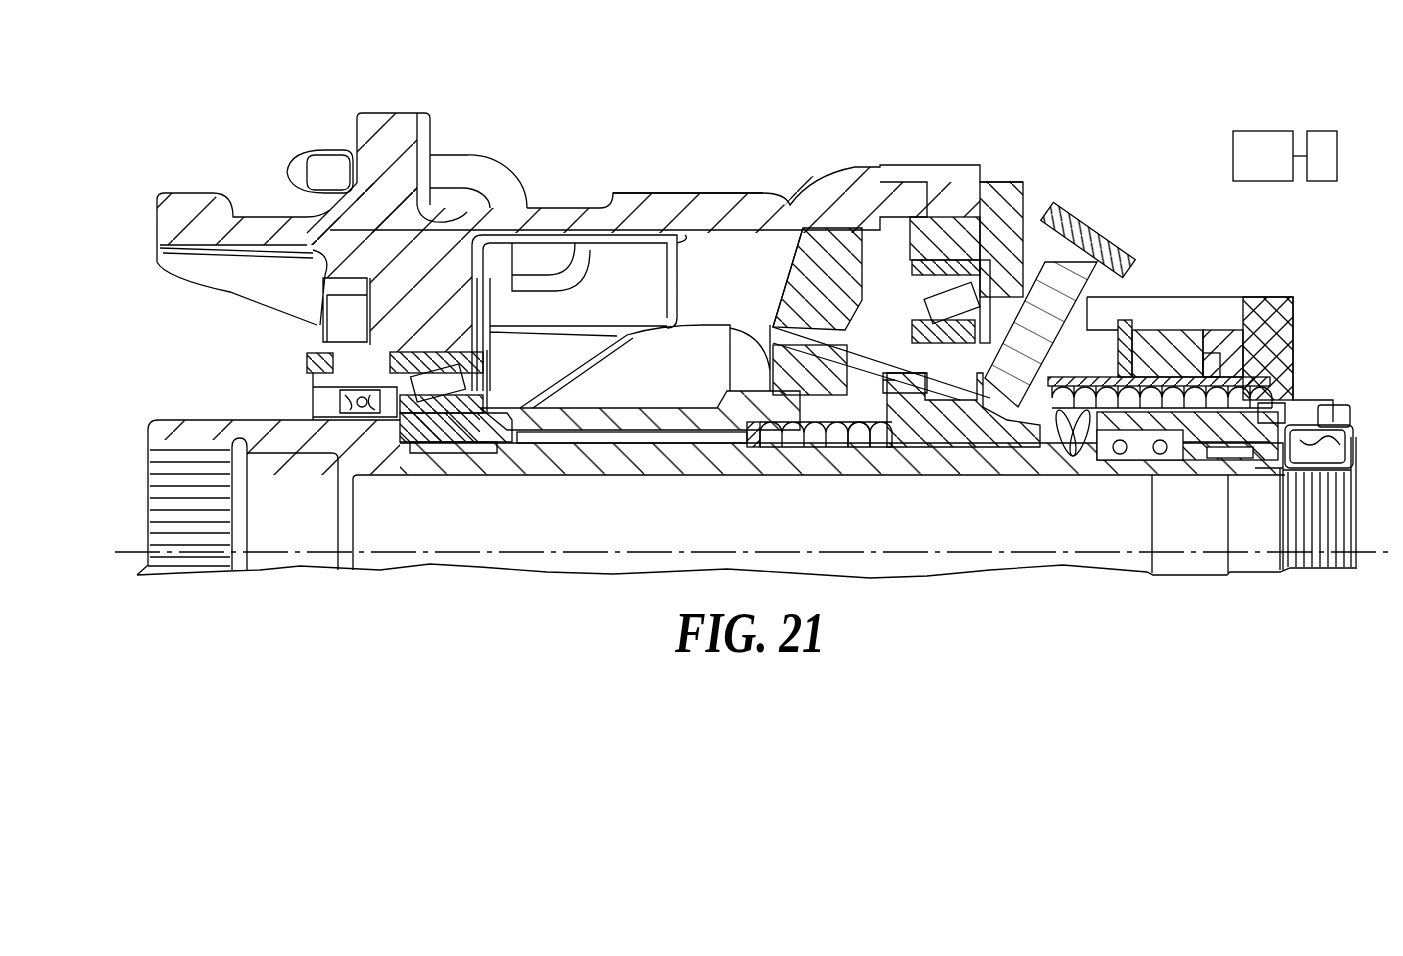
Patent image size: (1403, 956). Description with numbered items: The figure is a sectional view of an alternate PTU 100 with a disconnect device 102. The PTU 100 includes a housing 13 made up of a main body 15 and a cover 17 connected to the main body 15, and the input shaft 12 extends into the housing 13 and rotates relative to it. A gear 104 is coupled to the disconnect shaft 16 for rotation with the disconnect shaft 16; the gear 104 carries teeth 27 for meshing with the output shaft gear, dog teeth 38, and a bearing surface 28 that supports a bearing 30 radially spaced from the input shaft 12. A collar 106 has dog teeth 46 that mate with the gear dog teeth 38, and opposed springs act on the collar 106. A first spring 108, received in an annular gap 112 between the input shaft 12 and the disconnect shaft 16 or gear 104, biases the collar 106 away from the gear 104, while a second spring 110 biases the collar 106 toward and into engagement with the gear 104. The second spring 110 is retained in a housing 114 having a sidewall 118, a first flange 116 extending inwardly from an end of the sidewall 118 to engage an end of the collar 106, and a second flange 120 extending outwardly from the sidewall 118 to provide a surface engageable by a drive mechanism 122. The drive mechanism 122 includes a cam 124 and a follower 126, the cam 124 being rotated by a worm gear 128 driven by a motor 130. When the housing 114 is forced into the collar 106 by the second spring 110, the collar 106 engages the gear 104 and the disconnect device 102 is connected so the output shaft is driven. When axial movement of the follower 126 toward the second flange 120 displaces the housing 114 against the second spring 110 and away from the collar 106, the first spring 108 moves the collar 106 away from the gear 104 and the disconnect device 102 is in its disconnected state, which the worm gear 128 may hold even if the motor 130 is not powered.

The PTU 100 is at (235, 342).
The input shaft 12 is at (172, 437).
The housing 13 is at (650, 190).
The main body 15 is at (716, 192).
The disconnect shaft 16 is at (620, 422).
The cover 17 is at (1025, 185).
The teeth 27 is at (795, 275).
The bearing surface 28 is at (970, 362).
The bearing 30 is at (965, 285).
The dog teeth 38 is at (898, 373).
The dog teeth 46 is at (863, 440).
The disconnect device 102 is at (1000, 338).
The gear 104 is at (842, 245).
The collar 106 is at (952, 438).
The first spring 108 is at (790, 440).
The second spring 110 is at (1070, 425).
The annular gap 112 is at (757, 432).
The housing 114 is at (1065, 368).
The first flange 116 is at (1050, 445).
The sidewall 118 is at (1105, 378).
The second flange 120 is at (1293, 340).
The drive mechanism 122 is at (1190, 336).
The cam 124 is at (1160, 350).
The follower 126 is at (1215, 340).
The worm gear 128 is at (1186, 336).
The motor 130 is at (1330, 131).